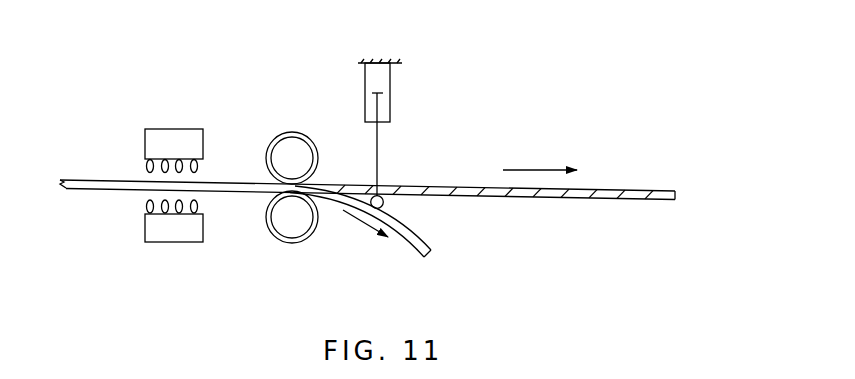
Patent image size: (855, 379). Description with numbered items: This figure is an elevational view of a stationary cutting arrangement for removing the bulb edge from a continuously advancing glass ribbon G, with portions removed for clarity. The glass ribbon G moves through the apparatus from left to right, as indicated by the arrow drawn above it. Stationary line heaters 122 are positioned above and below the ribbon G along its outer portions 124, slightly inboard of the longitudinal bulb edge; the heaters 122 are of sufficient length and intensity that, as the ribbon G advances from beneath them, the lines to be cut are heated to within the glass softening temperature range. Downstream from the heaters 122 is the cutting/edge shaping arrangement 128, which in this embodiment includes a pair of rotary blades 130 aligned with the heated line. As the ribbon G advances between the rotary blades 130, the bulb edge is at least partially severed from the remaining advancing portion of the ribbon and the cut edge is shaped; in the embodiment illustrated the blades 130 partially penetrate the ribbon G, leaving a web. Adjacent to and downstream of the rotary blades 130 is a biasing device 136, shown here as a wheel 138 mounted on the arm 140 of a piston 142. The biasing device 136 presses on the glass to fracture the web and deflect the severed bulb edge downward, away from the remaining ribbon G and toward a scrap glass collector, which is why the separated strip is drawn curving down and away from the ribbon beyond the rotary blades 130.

The glass ribbon G is at (617, 190).
The stationary line heaters 122 is at (145, 145).
The outer portions 124 is at (428, 252).
The cutting/edge shaping arrangement 128 is at (267, 177).
The rotary blades 130 is at (268, 152).
The biasing device 136 is at (438, 138).
The wheel 138 is at (383, 204).
The arm 140 is at (378, 156).
The piston 142 is at (390, 80).